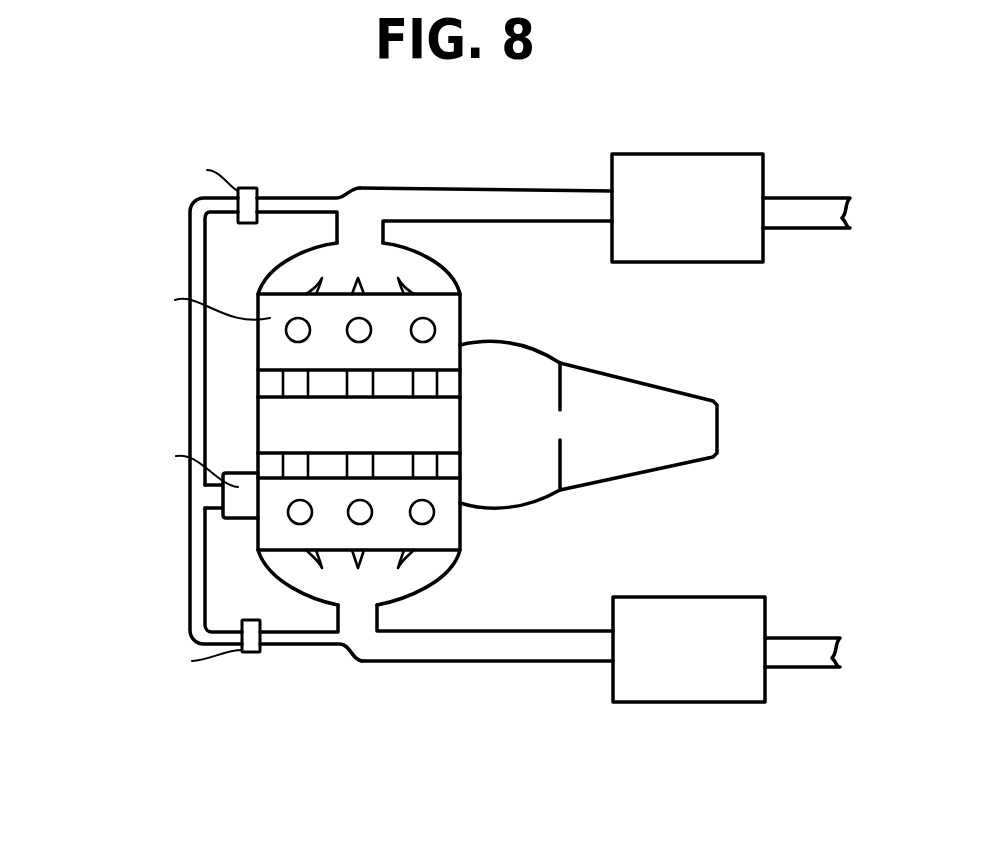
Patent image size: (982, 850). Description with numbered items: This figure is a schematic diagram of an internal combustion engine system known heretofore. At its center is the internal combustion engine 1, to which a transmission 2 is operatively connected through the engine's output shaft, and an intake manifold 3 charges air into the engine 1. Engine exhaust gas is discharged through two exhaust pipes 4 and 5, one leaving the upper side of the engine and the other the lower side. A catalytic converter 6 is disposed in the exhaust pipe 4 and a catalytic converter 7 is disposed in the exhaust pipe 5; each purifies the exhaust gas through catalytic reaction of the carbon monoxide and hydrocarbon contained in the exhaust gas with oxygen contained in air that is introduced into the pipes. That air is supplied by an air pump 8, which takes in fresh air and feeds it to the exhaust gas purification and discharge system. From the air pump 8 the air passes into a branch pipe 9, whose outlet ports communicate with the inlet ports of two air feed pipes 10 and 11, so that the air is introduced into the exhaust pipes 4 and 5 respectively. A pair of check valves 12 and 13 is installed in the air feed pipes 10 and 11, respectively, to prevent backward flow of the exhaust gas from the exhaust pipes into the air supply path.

The internal combustion engine 1 is at (438, 312).
The transmission 2 is at (520, 367).
The intake manifold 3 is at (438, 416).
The exhaust pipe 4 is at (474, 190).
The exhaust pipe 5 is at (443, 660).
The catalytic converter 6 is at (750, 163).
The catalytic converter 7 is at (685, 603).
The air pump 8 is at (241, 509).
The branch pipe 9 is at (188, 393).
The air feed pipe 10 is at (302, 198).
The air feed pipe 11 is at (310, 642).
The check valve 12 is at (245, 188).
The check valve 13 is at (250, 655).